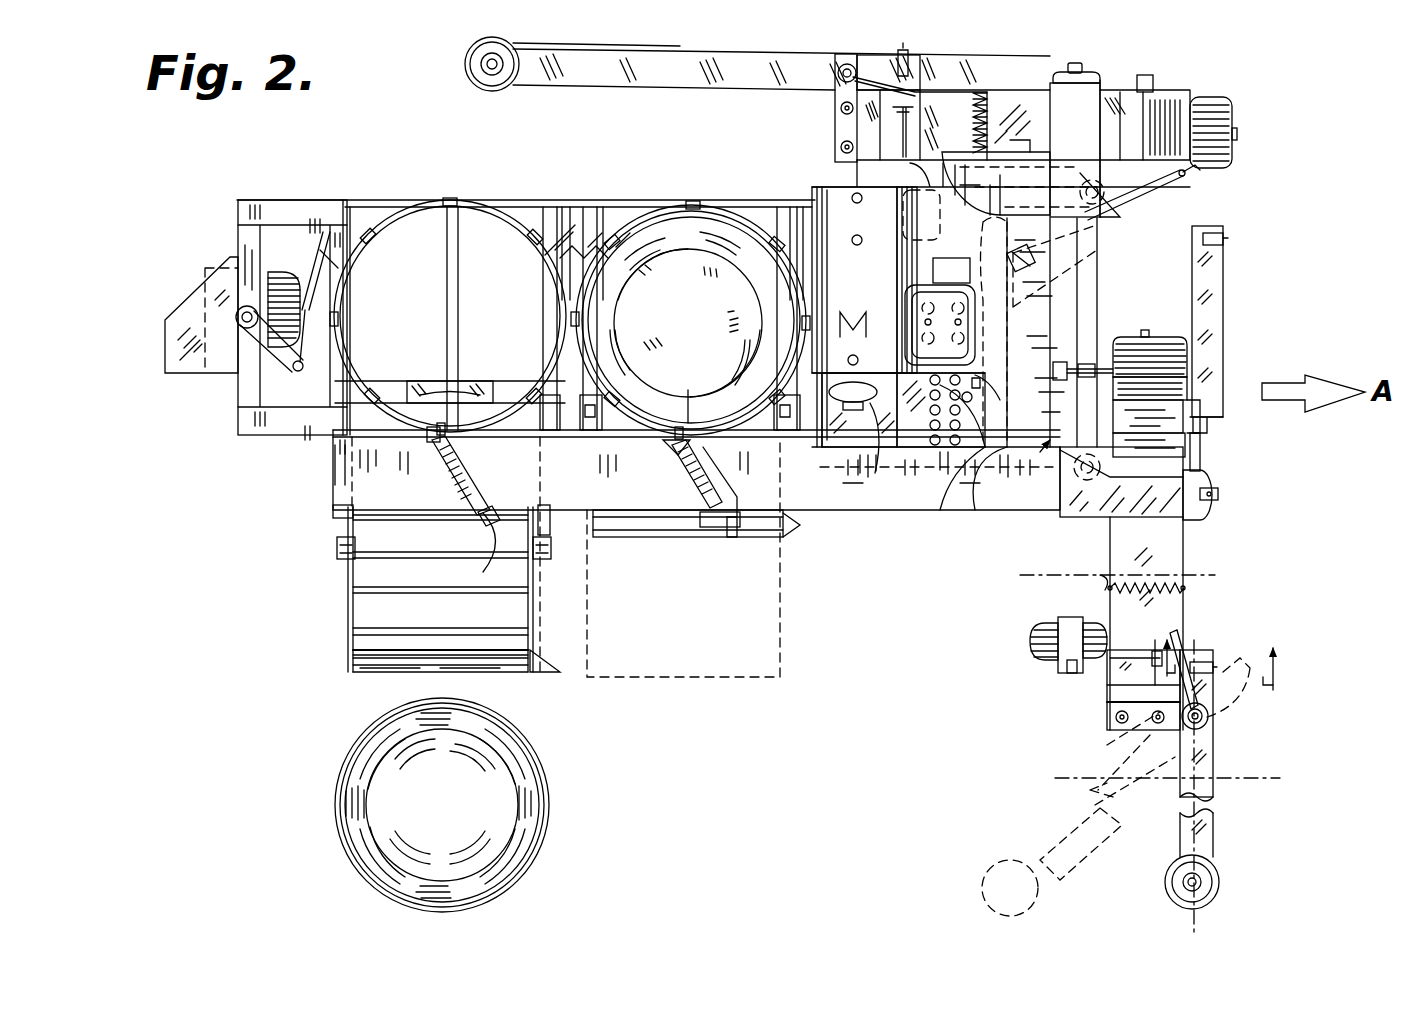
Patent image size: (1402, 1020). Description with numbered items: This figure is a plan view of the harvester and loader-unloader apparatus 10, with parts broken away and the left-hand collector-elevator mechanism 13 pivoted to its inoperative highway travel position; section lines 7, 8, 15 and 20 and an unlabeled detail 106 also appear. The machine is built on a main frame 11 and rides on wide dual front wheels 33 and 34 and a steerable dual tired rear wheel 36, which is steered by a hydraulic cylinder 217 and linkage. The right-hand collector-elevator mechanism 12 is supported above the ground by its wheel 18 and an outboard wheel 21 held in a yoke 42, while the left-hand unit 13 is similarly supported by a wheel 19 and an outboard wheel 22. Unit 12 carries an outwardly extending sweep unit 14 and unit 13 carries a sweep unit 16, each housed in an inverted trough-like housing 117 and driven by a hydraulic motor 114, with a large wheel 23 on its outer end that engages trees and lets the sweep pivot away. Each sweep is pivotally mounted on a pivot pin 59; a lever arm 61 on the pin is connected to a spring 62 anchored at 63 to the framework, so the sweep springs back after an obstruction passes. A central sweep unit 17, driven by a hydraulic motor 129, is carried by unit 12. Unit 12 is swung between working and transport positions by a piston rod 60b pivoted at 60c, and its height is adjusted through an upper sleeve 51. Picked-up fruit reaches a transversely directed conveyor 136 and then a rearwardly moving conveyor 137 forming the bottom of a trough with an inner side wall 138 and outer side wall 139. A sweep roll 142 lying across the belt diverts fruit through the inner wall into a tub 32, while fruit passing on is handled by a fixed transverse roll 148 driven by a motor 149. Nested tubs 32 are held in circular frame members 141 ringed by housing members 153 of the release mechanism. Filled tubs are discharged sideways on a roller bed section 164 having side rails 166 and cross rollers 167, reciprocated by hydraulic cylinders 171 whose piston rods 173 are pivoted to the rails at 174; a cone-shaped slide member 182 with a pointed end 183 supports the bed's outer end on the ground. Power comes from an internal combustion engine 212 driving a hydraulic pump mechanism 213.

The harvester and loader-unloader apparatus 10 is at (452, 163).
The left-hand sweep unit 16 is at (733, 46).
The wheel 23 is at (498, 22).
The pivot pin 59 is at (855, 62).
The hydraulic motor 114 is at (915, 72).
The left-hand collector-elevator mechanism 13 is at (963, 88).
The section line 8 is at (1103, 60).
The wheel 19 is at (1236, 150).
The wheel 22 is at (895, 178).
The upper sleeve 51 is at (1104, 186).
The piston rod 60b is at (1172, 196).
The pivot 60c is at (1256, 199).
The front wheel 34 is at (1095, 240).
The transversely directed conveyor 136 is at (1053, 333).
The central sweep unit 17 is at (1222, 350).
The wheel 18 is at (1128, 340).
The hydraulic motor 129 is at (1200, 448).
The knob 106 is at (1220, 494).
The section line 7 is at (1267, 443).
The right-hand collector-elevator mechanism 12 is at (1192, 537).
The right-hand sweep unit 14 is at (1027, 585).
The spring 62 is at (1108, 590).
The spring attachment point 63 is at (1102, 575).
The lever arm 61 is at (1183, 645).
The section line 15 is at (1216, 648).
The main frame 11 is at (1160, 636).
The yoke 42 is at (1067, 667).
The wheel 21 is at (1030, 640).
The inverted trough-like housing 117 is at (1178, 787).
The hydraulic cylinder 217 is at (300, 235).
The steerable dual tired rear wheel 36 is at (212, 268).
The circular frame member 141 is at (512, 180).
The housing member 153 is at (373, 248).
The hydraulic cylinder 171 is at (350, 334).
The drum 20 is at (683, 395).
The internal combustion engine 212 is at (815, 187).
The hydraulic pump mechanism 213 is at (903, 436).
The front wheel 33 is at (965, 518).
The rearwardly moving conveyor 137 is at (838, 503).
The outer side wall 139 is at (920, 515).
The inner side wall 138 is at (510, 446).
The fixed transverse roll 148 is at (463, 510).
The motor 149 is at (467, 548).
The sweep roll 142 is at (680, 518).
The roller bed section 164 is at (345, 624).
The side rail 166 is at (348, 603).
The cross roller 167 is at (475, 640).
The piston rod 173 is at (337, 525).
The pivotal connection 174 is at (337, 552).
The cone-shaped slide member 182 is at (488, 670).
The pointed end 183 is at (557, 670).
The tub 32 is at (549, 806).